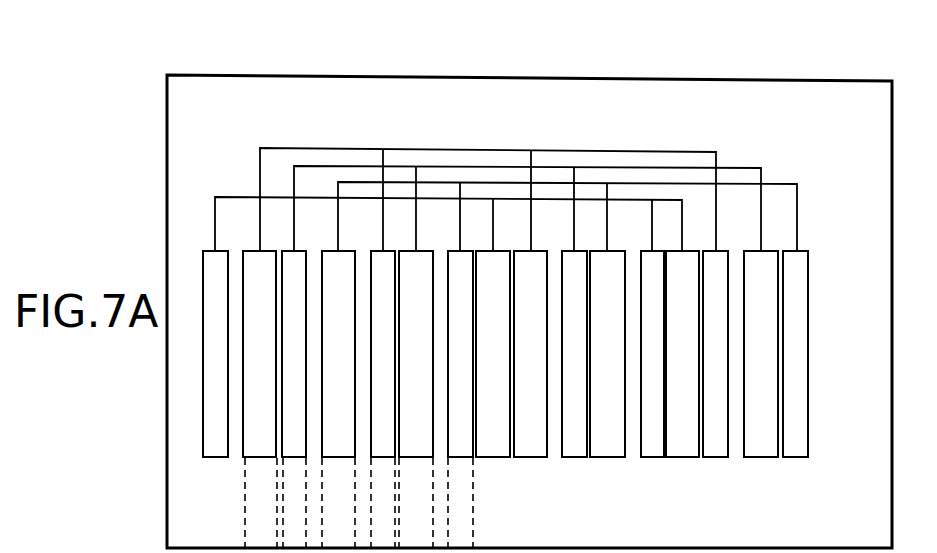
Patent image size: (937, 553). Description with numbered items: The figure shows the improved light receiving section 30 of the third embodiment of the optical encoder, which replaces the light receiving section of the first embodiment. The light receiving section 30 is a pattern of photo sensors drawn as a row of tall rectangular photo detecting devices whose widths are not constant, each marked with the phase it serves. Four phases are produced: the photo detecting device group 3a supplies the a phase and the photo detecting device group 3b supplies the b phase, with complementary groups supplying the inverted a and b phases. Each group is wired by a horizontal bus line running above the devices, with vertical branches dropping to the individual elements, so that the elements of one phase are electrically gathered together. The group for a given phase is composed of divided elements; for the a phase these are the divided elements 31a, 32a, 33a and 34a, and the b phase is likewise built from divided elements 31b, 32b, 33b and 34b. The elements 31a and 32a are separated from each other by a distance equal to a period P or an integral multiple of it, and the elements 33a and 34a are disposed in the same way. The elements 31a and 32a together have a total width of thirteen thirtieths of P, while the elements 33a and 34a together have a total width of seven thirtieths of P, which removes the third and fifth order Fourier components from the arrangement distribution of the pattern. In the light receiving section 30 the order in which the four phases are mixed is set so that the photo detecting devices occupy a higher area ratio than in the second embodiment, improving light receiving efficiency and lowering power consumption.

The light receiving section 30 is at (516, 78).
The photo detecting device group 3a is at (277, 148).
The photo detecting device group 3b is at (230, 197).
The divided element 31a is at (255, 458).
The divided element 31b is at (215, 458).
The divided element 32a is at (531, 458).
The divided element 32b is at (653, 458).
The divided element 33a is at (382, 458).
The divided element 33b is at (493, 458).
The divided element 34a is at (722, 458).
The divided element 34b is at (683, 458).